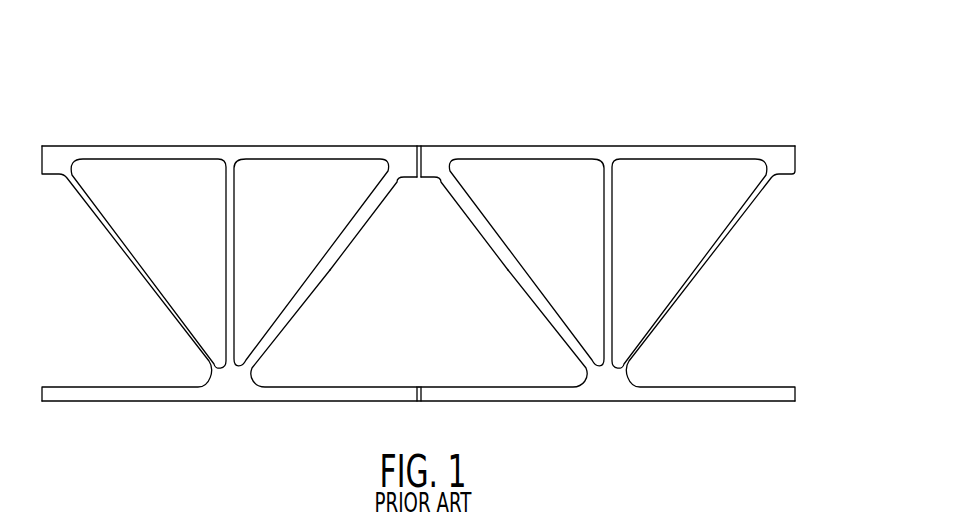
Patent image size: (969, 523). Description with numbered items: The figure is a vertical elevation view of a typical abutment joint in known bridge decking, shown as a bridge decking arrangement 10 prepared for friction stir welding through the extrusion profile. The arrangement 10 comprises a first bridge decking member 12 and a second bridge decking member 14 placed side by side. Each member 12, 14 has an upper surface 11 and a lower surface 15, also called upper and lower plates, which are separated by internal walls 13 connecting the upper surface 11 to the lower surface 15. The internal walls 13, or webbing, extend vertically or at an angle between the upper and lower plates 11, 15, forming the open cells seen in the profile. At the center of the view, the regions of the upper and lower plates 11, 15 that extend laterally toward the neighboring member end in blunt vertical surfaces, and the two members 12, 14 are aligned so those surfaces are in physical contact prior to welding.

The bridge decking arrangement 10 is at (603, 73).
The upper surface 11 is at (554, 153).
The first bridge decking member 12 is at (176, 146).
The internal walls 13 is at (692, 288).
The second bridge decking member 14 is at (706, 153).
The lower surface 15 is at (554, 393).